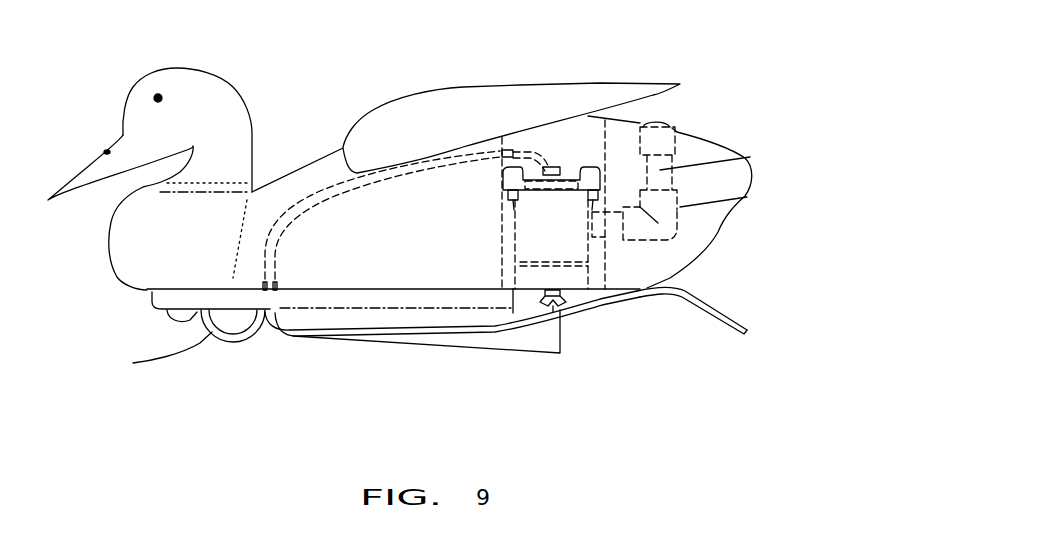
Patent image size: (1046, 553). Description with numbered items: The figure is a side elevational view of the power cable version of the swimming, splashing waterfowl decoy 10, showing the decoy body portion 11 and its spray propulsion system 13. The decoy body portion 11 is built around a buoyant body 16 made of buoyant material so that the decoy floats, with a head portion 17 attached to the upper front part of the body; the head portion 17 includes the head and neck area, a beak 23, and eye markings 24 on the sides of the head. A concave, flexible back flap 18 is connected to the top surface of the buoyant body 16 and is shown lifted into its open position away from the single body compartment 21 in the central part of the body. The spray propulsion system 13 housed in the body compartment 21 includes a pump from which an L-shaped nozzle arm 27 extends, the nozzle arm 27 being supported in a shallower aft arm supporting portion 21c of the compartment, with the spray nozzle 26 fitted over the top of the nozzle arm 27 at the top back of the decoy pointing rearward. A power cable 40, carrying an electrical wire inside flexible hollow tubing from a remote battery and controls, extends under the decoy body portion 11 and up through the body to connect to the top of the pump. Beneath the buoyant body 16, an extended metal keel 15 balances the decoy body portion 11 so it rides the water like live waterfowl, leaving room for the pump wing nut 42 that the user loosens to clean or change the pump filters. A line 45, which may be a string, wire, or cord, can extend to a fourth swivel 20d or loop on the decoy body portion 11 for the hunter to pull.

The waterfowl decoy 10 is at (759, 80).
The decoy body portion 11 is at (790, 122).
The spray propulsion system 13 is at (530, 110).
The keel 15 is at (398, 338).
The buoyant body 16 is at (217, 275).
The head portion 17 is at (213, 88).
The back flap 18 is at (380, 127).
The fourth swivel 20d is at (257, 340).
The body compartment 21 is at (510, 278).
The aft arm supporting portion 21c is at (593, 238).
The beak 23 is at (80, 183).
The eye markings 24 is at (157, 96).
The spray nozzle 26 is at (673, 138).
The nozzle arm 27 is at (660, 226).
The power cable 40 is at (713, 307).
The pump wing nut 42 is at (551, 303).
The line 45 is at (145, 360).